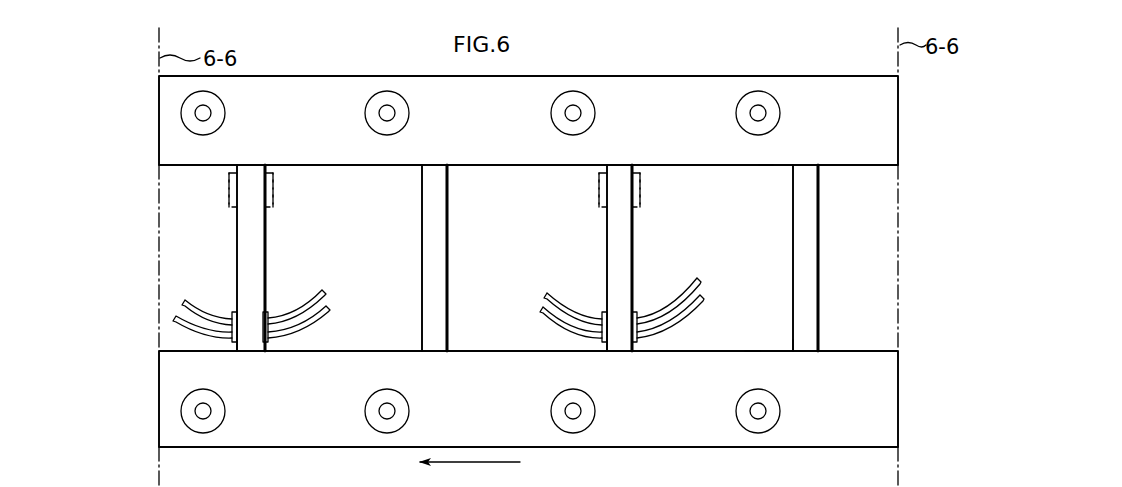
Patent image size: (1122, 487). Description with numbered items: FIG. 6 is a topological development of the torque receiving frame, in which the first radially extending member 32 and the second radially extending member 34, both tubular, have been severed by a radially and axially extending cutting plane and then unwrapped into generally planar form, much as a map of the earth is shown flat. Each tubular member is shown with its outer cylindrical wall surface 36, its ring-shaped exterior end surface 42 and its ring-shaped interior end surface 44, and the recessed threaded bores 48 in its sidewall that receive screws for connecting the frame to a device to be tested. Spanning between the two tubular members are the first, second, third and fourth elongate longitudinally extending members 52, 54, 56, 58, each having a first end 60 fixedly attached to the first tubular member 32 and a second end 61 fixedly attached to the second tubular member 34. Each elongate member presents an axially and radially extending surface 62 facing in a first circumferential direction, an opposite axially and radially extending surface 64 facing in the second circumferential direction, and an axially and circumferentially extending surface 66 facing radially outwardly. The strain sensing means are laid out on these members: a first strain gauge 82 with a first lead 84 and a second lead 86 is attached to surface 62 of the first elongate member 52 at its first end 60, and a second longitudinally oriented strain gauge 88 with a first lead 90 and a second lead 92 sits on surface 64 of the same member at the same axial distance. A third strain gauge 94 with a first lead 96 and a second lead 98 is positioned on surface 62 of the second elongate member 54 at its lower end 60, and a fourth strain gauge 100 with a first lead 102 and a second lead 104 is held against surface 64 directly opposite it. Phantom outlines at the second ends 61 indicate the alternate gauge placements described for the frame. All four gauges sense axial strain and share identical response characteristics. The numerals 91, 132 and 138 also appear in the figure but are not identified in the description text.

The first radially extending member 32 is at (905, 391).
The second radially extending member 34 is at (900, 139).
The outer cylindrical wall surface 36 is at (685, 82).
The exterior end surface 42 is at (756, 75).
The interior end surface 44 is at (764, 165).
The recessed threaded bores 48 is at (759, 413).
The first elongate longitudinally extending member 52 is at (294, 261).
The second elongate longitudinally extending member 54 is at (640, 223).
The third elongate longitudinally extending member 56 is at (452, 218).
The fourth elongate longitudinally extending member 58 is at (822, 218).
The first end 60 is at (256, 350).
The second end 61 is at (250, 174).
The axially and radially extending surface 62 is at (237, 250).
The axially and radially extending surface 64 is at (268, 275).
The axially and circumferentially extending surface 66 is at (255, 296).
The first strain gauge 82 is at (275, 193).
The first lead 84 is at (190, 301).
The second lead 86 is at (180, 316).
The second longitudinally oriented strain gauge 88 is at (227, 193).
The first lead 90 is at (326, 296).
The direction of movement 91 is at (538, 460).
The second lead 92 is at (330, 318).
The third strain gauge 94 is at (640, 187).
The first lead 96 is at (566, 314).
The second lead 98 is at (557, 334).
The fourth strain gauge 100 is at (597, 190).
The first lead 102 is at (690, 296).
The second lead 104 is at (673, 319).
The element 132 is at (665, 480).
The element 138 is at (380, 479).